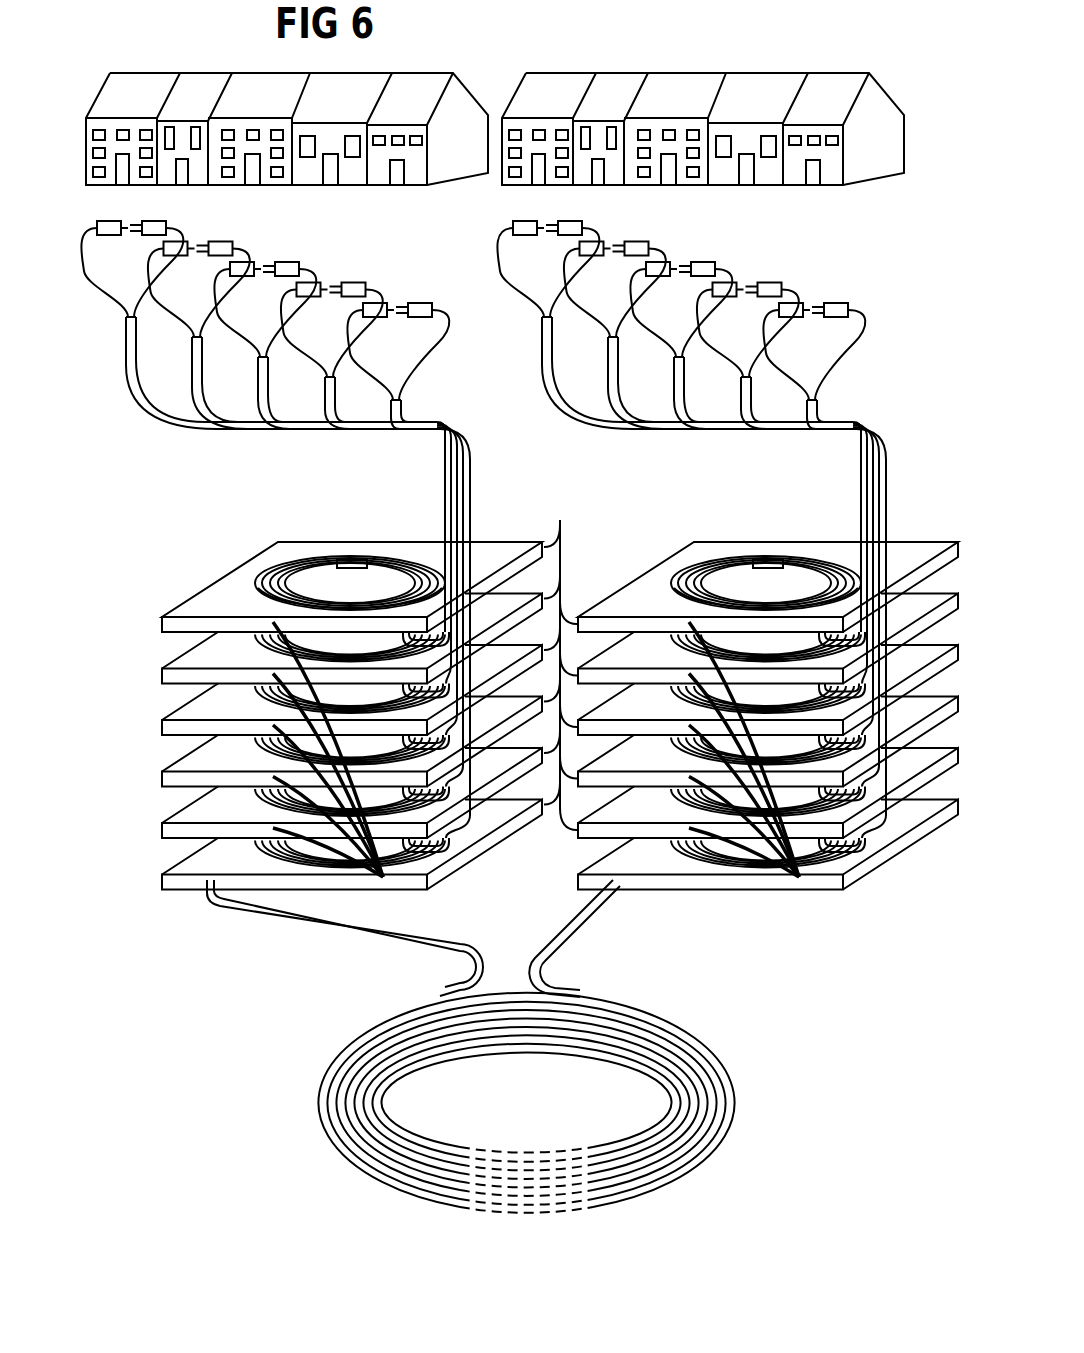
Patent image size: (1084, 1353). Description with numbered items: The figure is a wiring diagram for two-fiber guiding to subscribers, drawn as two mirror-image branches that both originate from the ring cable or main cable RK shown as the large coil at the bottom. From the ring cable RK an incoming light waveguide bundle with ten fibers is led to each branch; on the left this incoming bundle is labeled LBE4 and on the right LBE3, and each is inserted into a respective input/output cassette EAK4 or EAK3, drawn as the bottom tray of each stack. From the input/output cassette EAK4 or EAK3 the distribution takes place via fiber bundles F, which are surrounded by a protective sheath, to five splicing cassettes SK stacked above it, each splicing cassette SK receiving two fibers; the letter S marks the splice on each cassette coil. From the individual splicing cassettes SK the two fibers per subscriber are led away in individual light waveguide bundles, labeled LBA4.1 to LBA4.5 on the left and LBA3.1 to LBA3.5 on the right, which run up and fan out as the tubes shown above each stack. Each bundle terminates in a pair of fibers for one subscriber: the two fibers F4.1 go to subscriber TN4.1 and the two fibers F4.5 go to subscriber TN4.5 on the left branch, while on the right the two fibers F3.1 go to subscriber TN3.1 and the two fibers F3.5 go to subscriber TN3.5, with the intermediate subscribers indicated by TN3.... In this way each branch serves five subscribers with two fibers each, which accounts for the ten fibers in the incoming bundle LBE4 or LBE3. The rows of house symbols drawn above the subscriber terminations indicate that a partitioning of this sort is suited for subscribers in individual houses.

The subscriber TN4.1 is at (162, 221).
The fibers F4.1 is at (108, 292).
The subscriber TN4.5 is at (418, 303).
The fibers F4.5 is at (408, 352).
The light waveguide bundle LBA4.5 is at (402, 407).
The light waveguide bundle LBA4.1 is at (160, 407).
The splice S is at (350, 560).
The splicing cassette SK is at (560, 659).
The fiber bundles F is at (245, 835).
The input/output cassette EAK4 is at (480, 850).
The feeder cable 4 LBE4 is at (320, 926).
The feeder cable 3 LBE3 is at (583, 923).
The ring cable RK is at (733, 1093).
The subscriber TN3.1 is at (578, 221).
The fibers F3.1 is at (524, 292).
The subscriber TN3.5 is at (834, 303).
The fibers F3.5 is at (824, 352).
The light waveguide bundle LBA3.5 is at (818, 407).
The light waveguide bundle LBA3.1 is at (576, 407).
The input/output cassette EAK3 is at (896, 850).
The subscribers TN3... is at (916, 312).